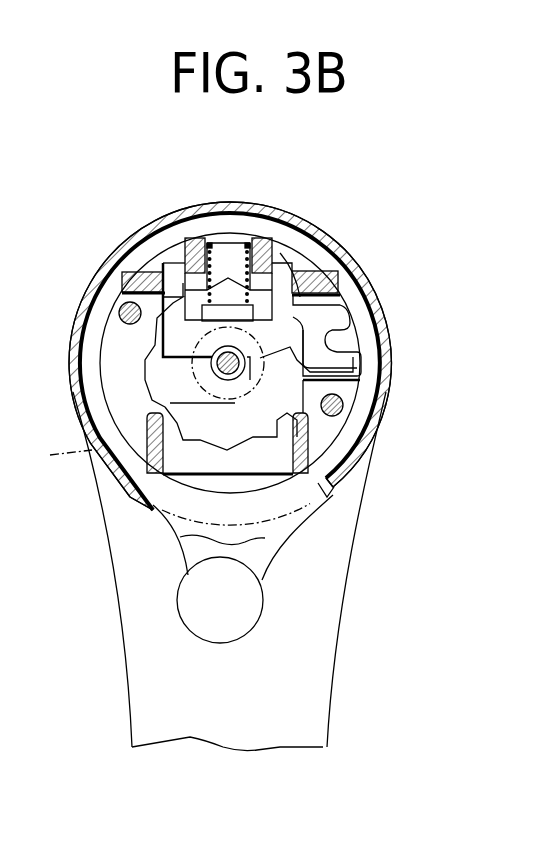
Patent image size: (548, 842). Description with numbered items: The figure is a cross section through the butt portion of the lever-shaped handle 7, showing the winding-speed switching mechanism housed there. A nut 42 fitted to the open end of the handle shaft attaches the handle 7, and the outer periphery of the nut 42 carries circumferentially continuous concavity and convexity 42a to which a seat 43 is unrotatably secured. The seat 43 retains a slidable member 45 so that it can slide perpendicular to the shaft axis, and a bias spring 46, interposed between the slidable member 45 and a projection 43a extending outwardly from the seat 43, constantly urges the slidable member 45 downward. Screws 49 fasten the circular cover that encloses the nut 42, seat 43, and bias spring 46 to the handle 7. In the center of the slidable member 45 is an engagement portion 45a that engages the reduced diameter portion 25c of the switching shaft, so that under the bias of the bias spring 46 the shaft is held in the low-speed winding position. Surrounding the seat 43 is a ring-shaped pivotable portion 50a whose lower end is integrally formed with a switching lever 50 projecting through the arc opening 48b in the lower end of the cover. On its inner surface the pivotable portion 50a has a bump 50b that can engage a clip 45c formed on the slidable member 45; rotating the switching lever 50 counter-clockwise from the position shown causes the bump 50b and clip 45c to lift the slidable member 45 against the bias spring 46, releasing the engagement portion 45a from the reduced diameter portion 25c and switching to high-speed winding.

The handle 7 is at (322, 598).
The switching lever 50 is at (239, 620).
The pivotable portion 50a is at (138, 262).
The bump 50b is at (338, 346).
The nut 42 is at (147, 400).
The concavity and convexity 42a is at (122, 309).
The seat 43 is at (197, 262).
The projection 43a is at (256, 255).
The slidable member 45 is at (178, 460).
The engagement portion 45a is at (333, 248).
The clip 45c is at (381, 390).
The bias spring 46 is at (225, 252).
The arc opening 48b is at (316, 495).
The screws 49 is at (338, 410).
The reduced diameter portion 25c is at (236, 356).